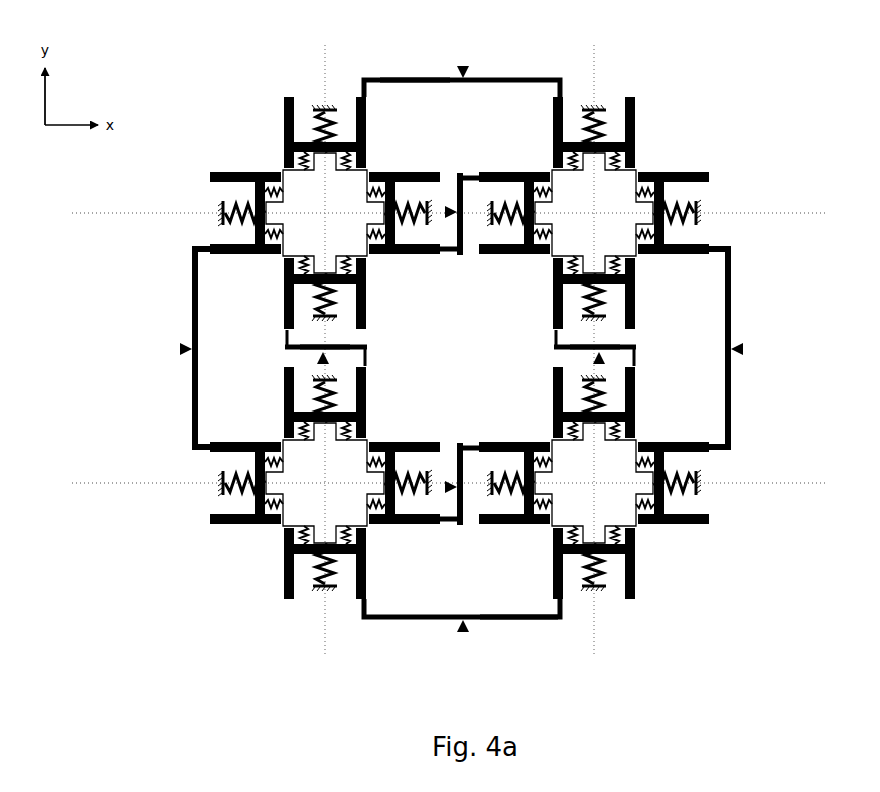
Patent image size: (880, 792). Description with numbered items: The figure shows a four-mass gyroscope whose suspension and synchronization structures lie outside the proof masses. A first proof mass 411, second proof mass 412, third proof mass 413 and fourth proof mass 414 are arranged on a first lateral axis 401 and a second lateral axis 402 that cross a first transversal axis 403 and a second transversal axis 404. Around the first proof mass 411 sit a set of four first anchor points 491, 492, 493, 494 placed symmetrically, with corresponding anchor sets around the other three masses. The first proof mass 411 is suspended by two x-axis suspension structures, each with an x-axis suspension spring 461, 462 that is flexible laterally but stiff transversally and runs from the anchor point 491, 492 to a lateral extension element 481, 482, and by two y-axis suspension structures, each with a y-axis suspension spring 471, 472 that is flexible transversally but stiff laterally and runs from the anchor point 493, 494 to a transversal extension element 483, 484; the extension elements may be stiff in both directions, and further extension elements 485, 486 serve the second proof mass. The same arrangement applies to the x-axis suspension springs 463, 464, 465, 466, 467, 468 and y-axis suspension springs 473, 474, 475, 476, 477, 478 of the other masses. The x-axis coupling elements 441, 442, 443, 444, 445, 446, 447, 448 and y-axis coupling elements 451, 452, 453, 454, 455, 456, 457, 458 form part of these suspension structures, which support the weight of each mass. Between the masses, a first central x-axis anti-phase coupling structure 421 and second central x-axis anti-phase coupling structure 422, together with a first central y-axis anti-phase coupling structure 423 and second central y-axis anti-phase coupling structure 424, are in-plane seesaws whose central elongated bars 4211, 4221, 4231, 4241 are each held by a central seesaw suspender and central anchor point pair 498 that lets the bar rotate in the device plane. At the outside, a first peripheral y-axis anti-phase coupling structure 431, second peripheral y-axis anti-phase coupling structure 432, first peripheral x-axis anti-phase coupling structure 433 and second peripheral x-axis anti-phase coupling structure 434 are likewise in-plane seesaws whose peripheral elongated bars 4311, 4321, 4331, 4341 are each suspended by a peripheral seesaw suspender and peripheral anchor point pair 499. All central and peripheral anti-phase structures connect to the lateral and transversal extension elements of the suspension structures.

The first lateral axis 401 is at (428, 213).
The second lateral axis 402 is at (428, 483).
The first transversal axis 403 is at (327, 362).
The second transversal axis 404 is at (595, 362).
The first proof mass 411 is at (325, 213).
The second proof mass 412 is at (594, 213).
The third proof mass 413 is at (325, 483).
The fourth proof mass 414 is at (594, 483).
The first central x-axis anti-phase coupling structure 421 is at (455, 268).
The central elongated bar 4211 is at (466, 256).
The second central x-axis anti-phase coupling structure 422 is at (454, 427).
The central elongated bar 4221 is at (459, 441).
The first central y-axis anti-phase coupling structure 423 is at (384, 351).
The central elongated bar 4231 is at (376, 346).
The second central y-axis anti-phase coupling structure 424 is at (541, 349).
The central elongated bar 4241 is at (556, 356).
The first peripheral y-axis anti-phase coupling structure 431 is at (507, 66).
The peripheral elongated bar 4311 is at (437, 75).
The second peripheral y-axis anti-phase coupling structure 432 is at (548, 623).
The peripheral elongated bar 4321 is at (558, 626).
The first peripheral x-axis anti-phase coupling structure 433 is at (168, 376).
The peripheral elongated bar 4331 is at (190, 300).
The second peripheral x-axis anti-phase coupling structure 434 is at (738, 374).
The peripheral elongated bar 4341 is at (731, 300).
The x-axis coupling element 441 is at (261, 191).
The x-axis coupling element 442 is at (393, 254).
The x-axis coupling element 443 is at (525, 191).
The x-axis coupling element 444 is at (655, 259).
The x-axis coupling element 445 is at (250, 439).
The x-axis coupling element 446 is at (392, 523).
The x-axis coupling element 447 is at (520, 446).
The x-axis coupling element 448 is at (650, 523).
The y-axis coupling element 451 is at (282, 137).
The y-axis coupling element 452 is at (371, 286).
The y-axis coupling element 453 is at (552, 137).
The y-axis coupling element 454 is at (635, 286).
The y-axis coupling element 455 is at (283, 407).
The y-axis coupling element 456 is at (368, 561).
The y-axis coupling element 457 is at (554, 410).
The y-axis coupling element 458 is at (637, 561).
The x-axis suspension spring 461 is at (235, 197).
The x-axis suspension spring 462 is at (415, 204).
The x-axis suspension spring 463 is at (507, 199).
The x-axis suspension spring 464 is at (678, 204).
The x-axis suspension spring 465 is at (236, 498).
The x-axis suspension spring 466 is at (412, 471).
The x-axis suspension spring 467 is at (514, 499).
The x-axis suspension spring 468 is at (680, 467).
The y-axis suspension spring 471 is at (340, 128).
The y-axis suspension spring 472 is at (312, 300).
The y-axis suspension spring 473 is at (608, 128).
The y-axis suspension spring 474 is at (584, 308).
The y-axis suspension spring 475 is at (340, 400).
The y-axis suspension spring 476 is at (311, 573).
The y-axis suspension spring 477 is at (606, 398).
The y-axis suspension spring 478 is at (582, 573).
The lateral extension element 481 is at (232, 259).
The lateral extension element 482 is at (386, 171).
The transversal extension element 483 is at (283, 96).
The transversal extension element 484 is at (282, 316).
The extension element 485 is at (531, 259).
The extension element 486 is at (564, 97).
The first anchor point 491 is at (216, 213).
The first anchor point 492 is at (432, 198).
The first anchor point 493 is at (320, 104).
The first anchor point 494 is at (338, 330).
The central seesaw suspender-central anchor point pair 498 is at (455, 204).
The peripheral seesaw suspender-peripheral anchor point pair 499 is at (471, 62).